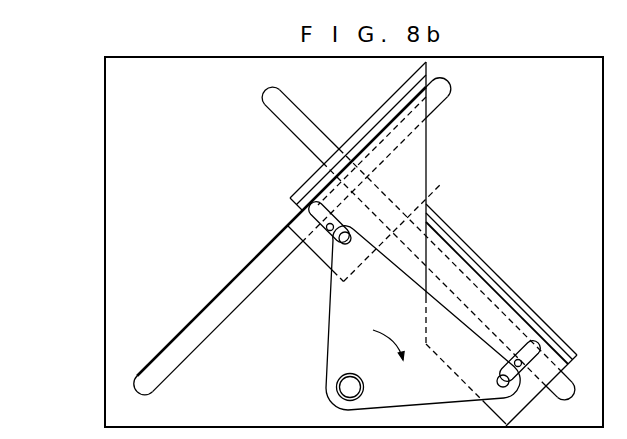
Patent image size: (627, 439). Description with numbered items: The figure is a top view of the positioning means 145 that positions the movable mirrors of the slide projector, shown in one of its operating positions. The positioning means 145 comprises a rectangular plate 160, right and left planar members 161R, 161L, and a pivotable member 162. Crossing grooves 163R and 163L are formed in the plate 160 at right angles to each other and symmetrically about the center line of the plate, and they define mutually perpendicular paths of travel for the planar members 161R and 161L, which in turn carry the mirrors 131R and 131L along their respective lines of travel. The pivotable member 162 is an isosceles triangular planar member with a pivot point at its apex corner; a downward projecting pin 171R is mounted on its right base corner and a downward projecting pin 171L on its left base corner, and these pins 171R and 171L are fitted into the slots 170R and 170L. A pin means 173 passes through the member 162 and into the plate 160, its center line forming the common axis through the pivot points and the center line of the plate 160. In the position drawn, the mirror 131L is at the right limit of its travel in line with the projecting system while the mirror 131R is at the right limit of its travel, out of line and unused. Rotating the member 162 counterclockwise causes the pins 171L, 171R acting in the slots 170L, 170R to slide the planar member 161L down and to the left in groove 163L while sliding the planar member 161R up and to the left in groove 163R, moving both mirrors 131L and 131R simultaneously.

The rectangular plate 160 is at (138, 100).
The left mirror 131L is at (358, 136).
The right mirror 131R is at (472, 266).
The left planar member 161L is at (283, 207).
The right planar member 161R is at (560, 352).
The left groove 163L is at (245, 289).
The right groove 163R is at (290, 115).
The positioning means 145 is at (438, 187).
The pivotable member 162 is at (333, 331).
The pin means 173 is at (345, 387).
The left slot 170L is at (327, 231).
The right slot 170R is at (513, 360).
The left pin 171L is at (350, 243).
The right pin 171R is at (512, 388).